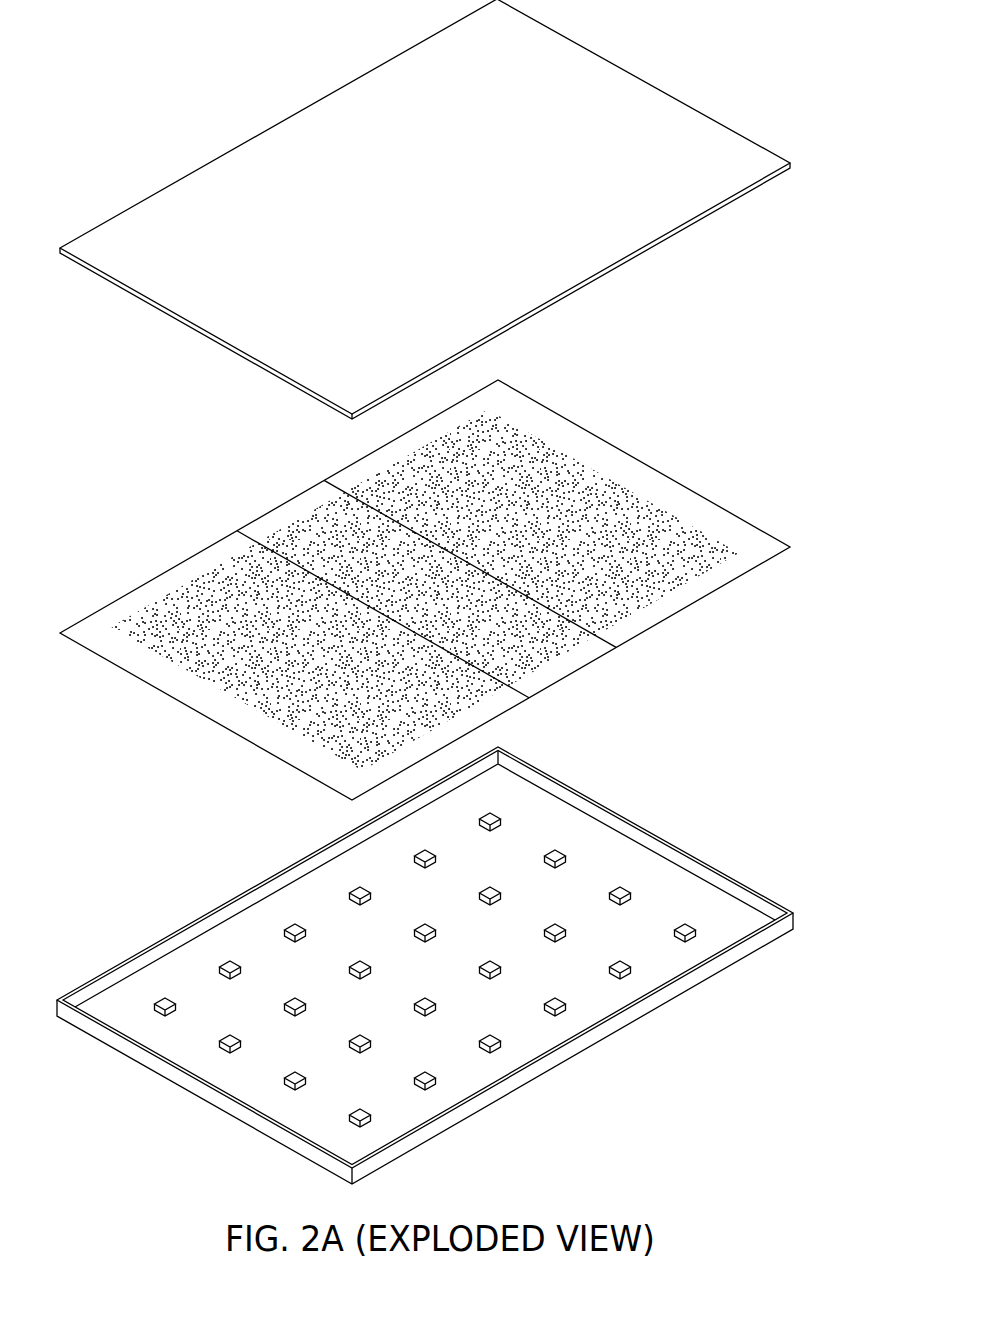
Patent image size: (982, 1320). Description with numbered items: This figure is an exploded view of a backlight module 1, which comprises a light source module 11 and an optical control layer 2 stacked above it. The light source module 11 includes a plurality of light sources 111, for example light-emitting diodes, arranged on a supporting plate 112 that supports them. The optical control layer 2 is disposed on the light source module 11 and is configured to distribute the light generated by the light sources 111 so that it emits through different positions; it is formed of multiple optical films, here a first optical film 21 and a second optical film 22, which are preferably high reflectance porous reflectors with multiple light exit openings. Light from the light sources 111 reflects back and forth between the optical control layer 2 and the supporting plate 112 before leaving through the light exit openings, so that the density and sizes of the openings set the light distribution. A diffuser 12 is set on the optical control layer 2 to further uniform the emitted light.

The backlight module 1 is at (174, 36).
The light source module 11 is at (448, 965).
The light sources 111 is at (158, 1007).
The supporting plate 112 is at (540, 1086).
The diffuser 12 is at (675, 137).
The optical control layer 2 is at (425, 590).
The first optical film 21 is at (225, 555).
The second optical film 22 is at (497, 528).